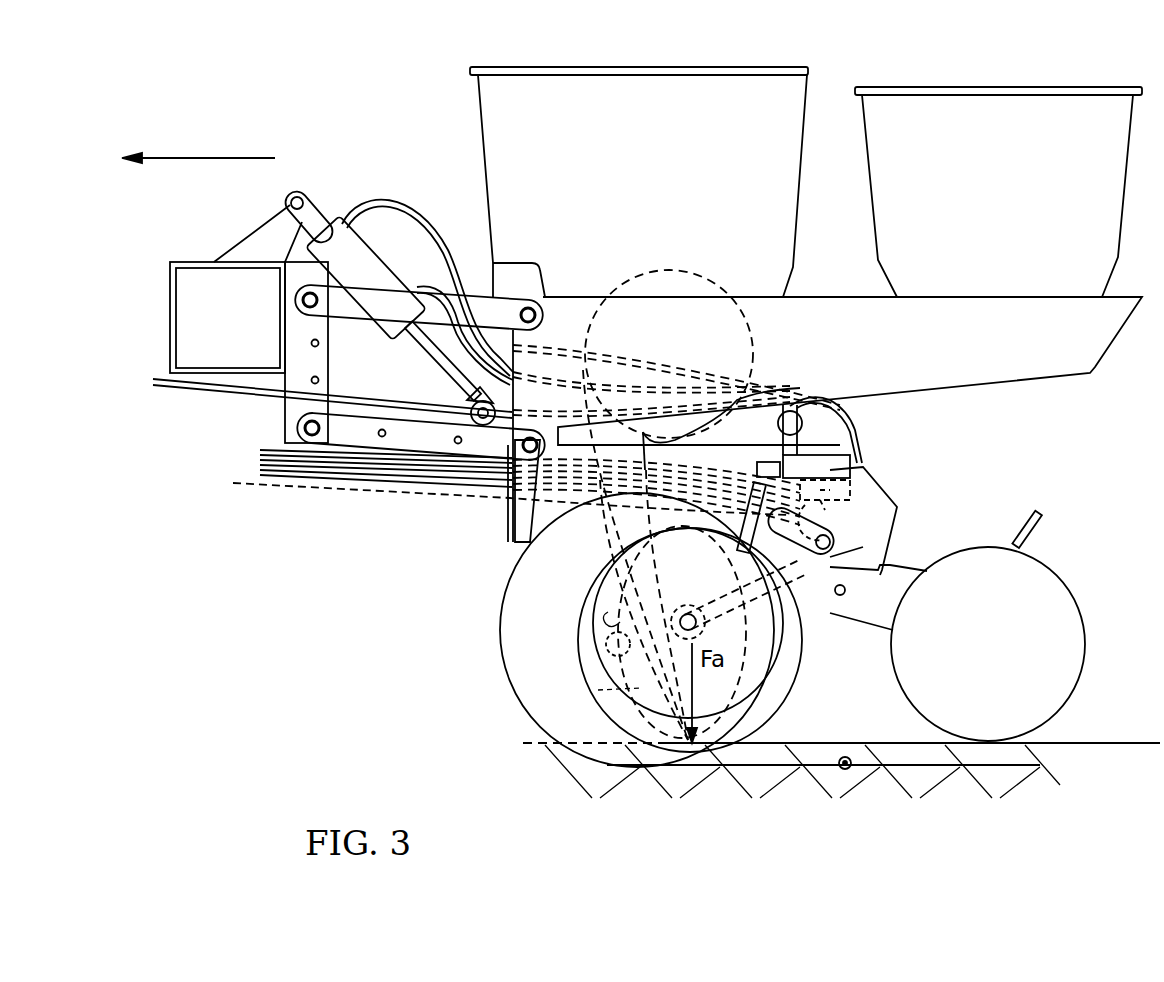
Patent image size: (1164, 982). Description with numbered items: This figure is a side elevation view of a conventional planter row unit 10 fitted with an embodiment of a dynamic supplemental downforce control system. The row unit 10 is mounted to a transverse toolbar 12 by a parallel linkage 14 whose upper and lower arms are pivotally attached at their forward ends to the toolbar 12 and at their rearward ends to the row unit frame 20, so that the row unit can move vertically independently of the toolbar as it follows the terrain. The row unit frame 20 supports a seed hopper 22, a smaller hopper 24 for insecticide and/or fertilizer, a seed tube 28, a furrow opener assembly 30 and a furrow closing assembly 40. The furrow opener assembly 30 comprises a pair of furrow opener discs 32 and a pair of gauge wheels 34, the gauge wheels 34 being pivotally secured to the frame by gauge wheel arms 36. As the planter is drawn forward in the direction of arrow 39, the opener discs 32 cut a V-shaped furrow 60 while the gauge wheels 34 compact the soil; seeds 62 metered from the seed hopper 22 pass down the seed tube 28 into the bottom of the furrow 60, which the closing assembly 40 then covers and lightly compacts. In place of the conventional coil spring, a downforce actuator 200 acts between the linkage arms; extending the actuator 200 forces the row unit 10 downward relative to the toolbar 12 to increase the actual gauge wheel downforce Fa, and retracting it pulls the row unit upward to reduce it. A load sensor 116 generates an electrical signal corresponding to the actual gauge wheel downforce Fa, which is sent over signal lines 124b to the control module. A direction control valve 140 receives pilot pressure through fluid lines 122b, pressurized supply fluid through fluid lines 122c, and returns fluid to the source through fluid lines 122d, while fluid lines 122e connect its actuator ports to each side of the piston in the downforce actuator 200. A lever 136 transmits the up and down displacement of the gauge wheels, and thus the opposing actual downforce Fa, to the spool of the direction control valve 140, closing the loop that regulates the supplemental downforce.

The row unit 10 is at (346, 108).
The transverse toolbar 12 is at (172, 325).
The parallel linkage 14 is at (288, 416).
The row unit frame 20 is at (504, 547).
The seed hopper 22 is at (652, 182).
The smaller hopper 24 is at (1023, 192).
The seed tube 28 is at (783, 700).
The furrow opener assembly 30 is at (479, 658).
The furrow opener discs 32 is at (522, 682).
The gauge wheels 34 is at (587, 605).
The gauge wheel arms 36 is at (803, 657).
The arrow 39 is at (190, 157).
The furrow closing assembly 40 is at (1081, 515).
The V-shaped furrow 60 is at (770, 758).
The seeds 62 is at (846, 770).
The load sensor 116 is at (847, 557).
The fluid lines 122b is at (862, 420).
The fluid lines 122c is at (377, 466).
The fluid lines 122d is at (312, 452).
The fluid lines 122e is at (427, 265).
The signal lines 124b is at (447, 495).
The lever 136 is at (843, 497).
The direction control valve 140 is at (880, 463).
The downforce actuator 200 is at (356, 195).